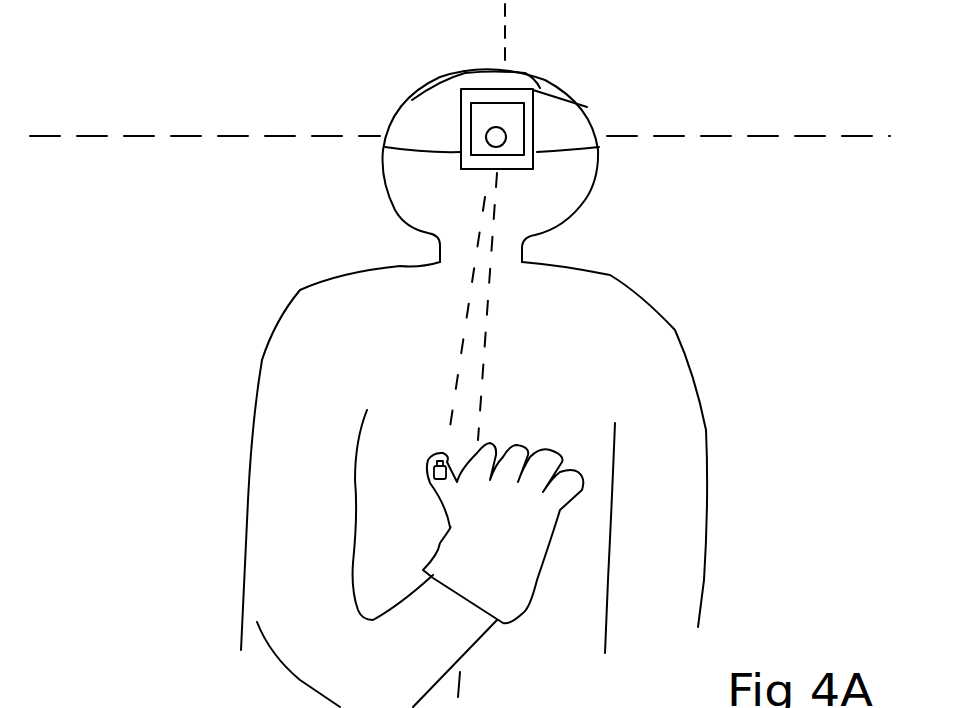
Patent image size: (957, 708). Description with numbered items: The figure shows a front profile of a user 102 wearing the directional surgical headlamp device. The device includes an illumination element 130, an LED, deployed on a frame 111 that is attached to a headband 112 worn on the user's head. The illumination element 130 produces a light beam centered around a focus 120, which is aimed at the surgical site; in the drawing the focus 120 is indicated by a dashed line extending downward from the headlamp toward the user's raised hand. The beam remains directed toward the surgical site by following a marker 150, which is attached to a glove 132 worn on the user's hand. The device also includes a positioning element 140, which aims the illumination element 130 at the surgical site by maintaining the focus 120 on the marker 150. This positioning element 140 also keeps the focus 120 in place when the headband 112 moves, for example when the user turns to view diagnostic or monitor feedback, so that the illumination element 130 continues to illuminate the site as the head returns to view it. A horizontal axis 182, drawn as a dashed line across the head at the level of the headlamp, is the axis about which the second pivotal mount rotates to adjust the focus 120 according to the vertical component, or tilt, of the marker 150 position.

The user 102 is at (638, 298).
The frame 111 is at (525, 87).
The headband 112 is at (583, 122).
The focus 120 is at (468, 340).
The illumination element 130 is at (494, 127).
The glove 132 is at (521, 581).
The positioning element 140 is at (462, 130).
The marker 150 is at (442, 460).
The horizontal axis 182 is at (776, 135).